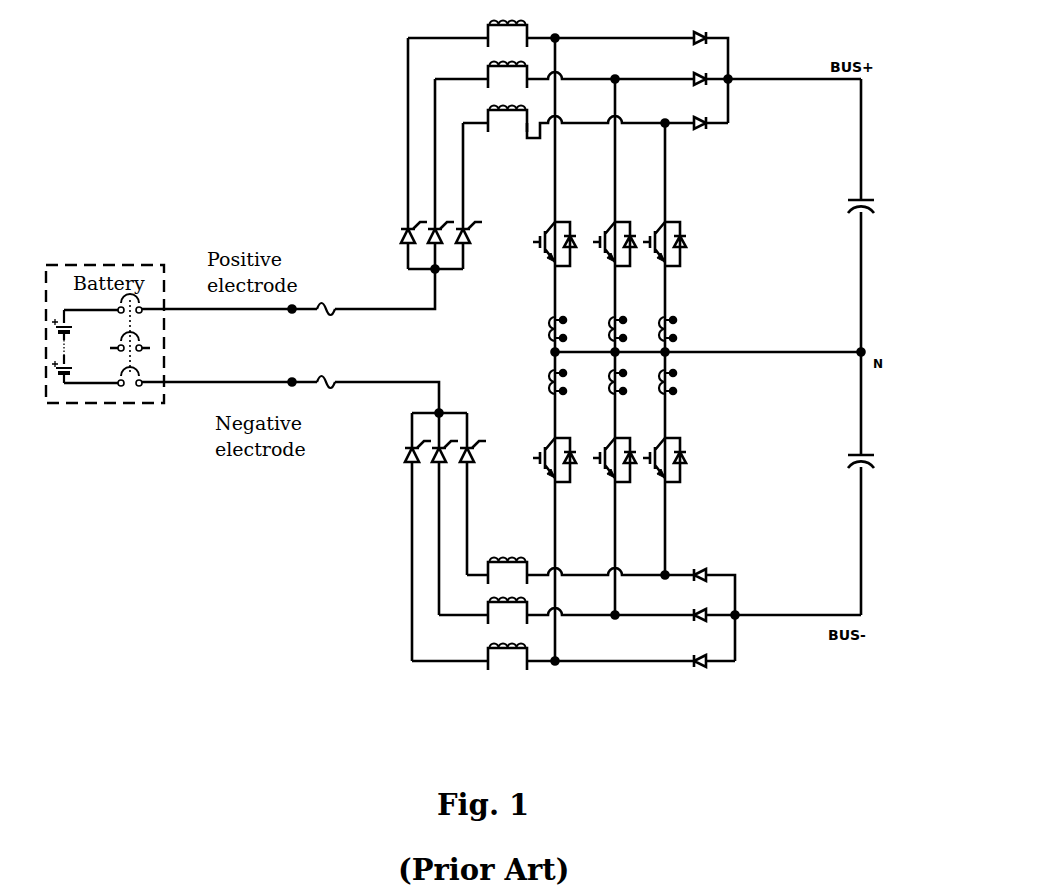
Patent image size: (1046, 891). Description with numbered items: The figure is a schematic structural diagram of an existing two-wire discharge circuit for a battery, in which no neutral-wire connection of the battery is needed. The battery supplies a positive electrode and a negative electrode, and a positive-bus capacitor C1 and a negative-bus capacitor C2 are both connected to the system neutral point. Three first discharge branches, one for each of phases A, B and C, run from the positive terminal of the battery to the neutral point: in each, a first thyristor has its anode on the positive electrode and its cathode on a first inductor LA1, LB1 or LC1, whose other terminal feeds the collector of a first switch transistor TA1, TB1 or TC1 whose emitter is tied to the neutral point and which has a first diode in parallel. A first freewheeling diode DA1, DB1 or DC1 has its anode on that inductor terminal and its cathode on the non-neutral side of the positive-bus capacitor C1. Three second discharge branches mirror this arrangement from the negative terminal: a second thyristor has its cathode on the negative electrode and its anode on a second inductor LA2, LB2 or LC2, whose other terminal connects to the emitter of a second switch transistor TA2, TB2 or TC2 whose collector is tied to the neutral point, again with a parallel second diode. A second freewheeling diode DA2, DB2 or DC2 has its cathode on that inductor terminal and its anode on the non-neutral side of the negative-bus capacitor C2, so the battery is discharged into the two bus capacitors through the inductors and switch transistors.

The first inductor of phase A LA1 is at (507, 35).
The first inductor of phase B LB1 is at (507, 76).
The first inductor of phase C LC1 is at (507, 120).
The second inductor of phase A LA2 is at (507, 572).
The second inductor of phase B LB2 is at (507, 612).
The second inductor of phase C LC2 is at (507, 658).
The first freewheeling diode of phase A DA1 is at (700, 47).
The first freewheeling diode of phase B DB1 is at (700, 89).
The first freewheeling diode of phase C DC1 is at (700, 133).
The second freewheeling diode of phase A DA2 is at (700, 584).
The second freewheeling diode of phase B DB2 is at (700, 624).
The second freewheeling diode of phase C DC2 is at (700, 669).
The first switch transistor of phase A TA1 is at (546, 241).
The first switch transistor of phase B TB1 is at (606, 241).
The first switch transistor of phase C TC1 is at (657, 241).
The second switch transistor of phase A TA2 is at (546, 458).
The second switch transistor of phase B TB2 is at (606, 458).
The second switch transistor of phase C TC2 is at (657, 458).
The positive-bus capacitor C1 is at (849, 206).
The negative-bus capacitor C2 is at (849, 462).